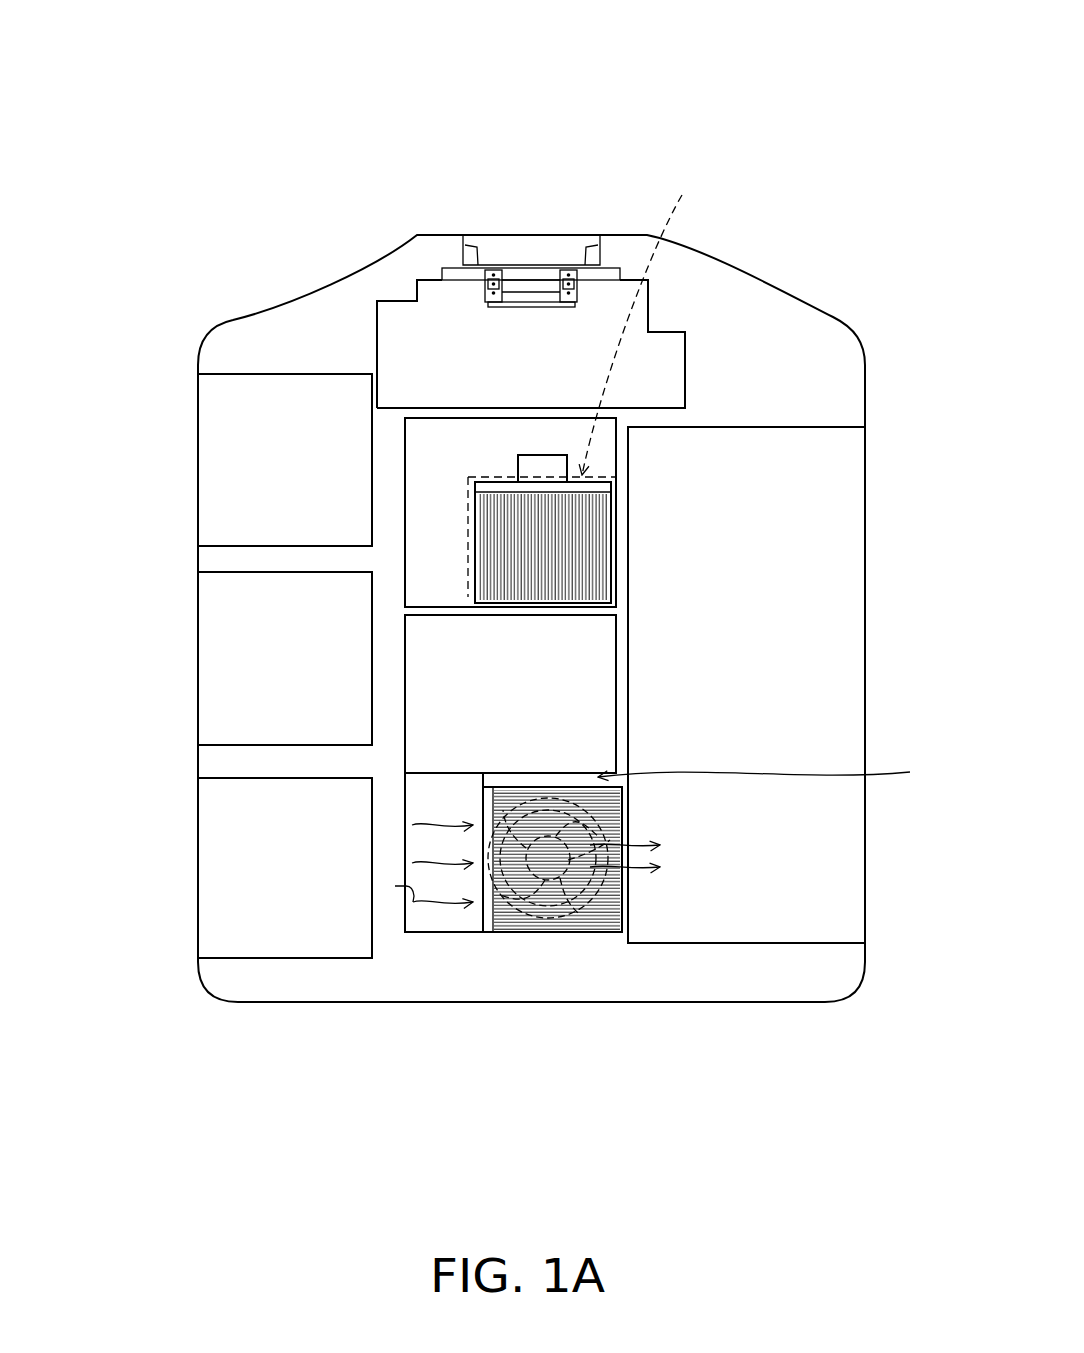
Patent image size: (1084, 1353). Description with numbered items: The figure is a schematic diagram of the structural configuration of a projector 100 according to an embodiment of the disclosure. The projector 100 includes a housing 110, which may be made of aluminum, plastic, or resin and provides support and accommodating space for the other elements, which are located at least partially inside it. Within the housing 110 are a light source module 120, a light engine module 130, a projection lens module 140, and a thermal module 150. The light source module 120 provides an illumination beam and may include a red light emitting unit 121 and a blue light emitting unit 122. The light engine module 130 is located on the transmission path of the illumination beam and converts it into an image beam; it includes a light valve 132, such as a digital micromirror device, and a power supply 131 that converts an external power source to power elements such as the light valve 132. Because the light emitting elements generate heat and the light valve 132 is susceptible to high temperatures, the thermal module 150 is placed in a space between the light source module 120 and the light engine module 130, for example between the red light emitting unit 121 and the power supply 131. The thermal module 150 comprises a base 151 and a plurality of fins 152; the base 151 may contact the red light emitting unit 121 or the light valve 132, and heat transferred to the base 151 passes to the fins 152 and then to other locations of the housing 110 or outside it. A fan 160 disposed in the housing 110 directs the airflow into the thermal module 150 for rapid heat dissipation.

The projector 100 is at (503, 607).
The housing 110 is at (745, 308).
The light source module 120 is at (276, 666).
The red light emitting unit 121 is at (450, 805).
The blue light emitting unit 122 is at (218, 638).
The light engine module 130 is at (727, 475).
The power supply 131 is at (823, 677).
The light valve 132 is at (542, 462).
The projection lens module 140 is at (528, 237).
The thermal module 150 is at (541, 706).
The base 151 is at (523, 485).
The fins 152 is at (482, 507).
The fan 160 is at (547, 925).